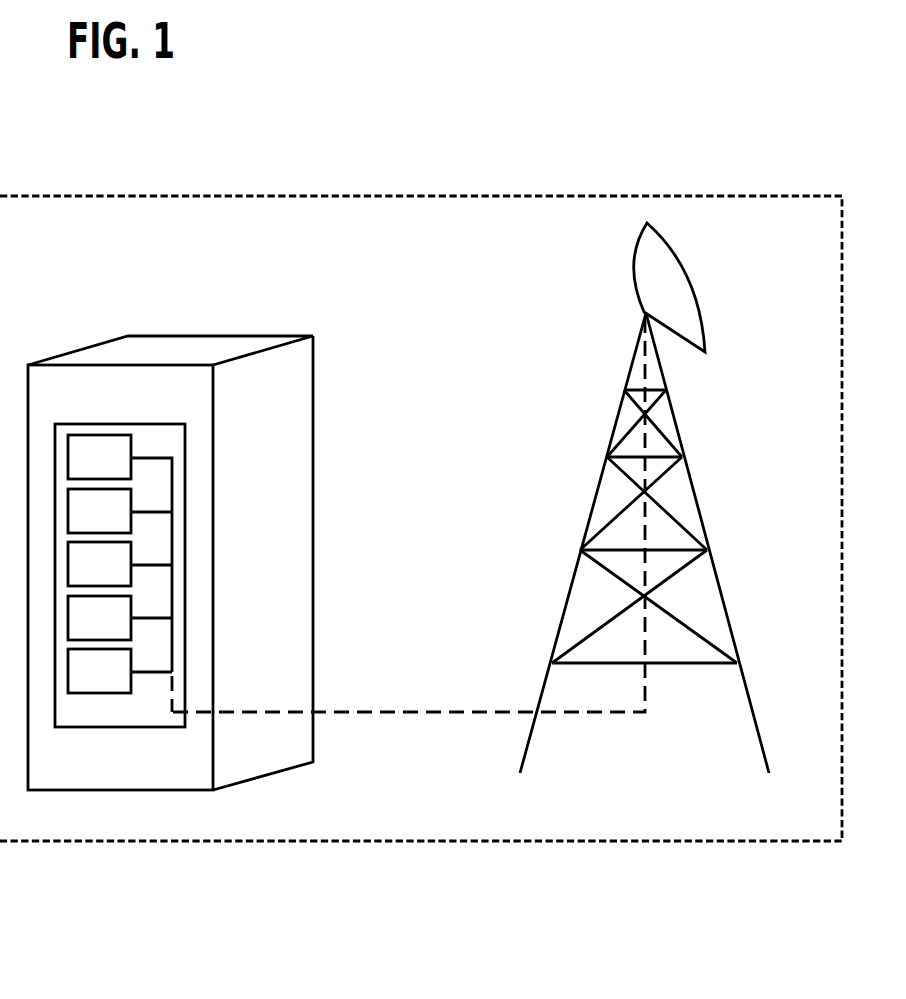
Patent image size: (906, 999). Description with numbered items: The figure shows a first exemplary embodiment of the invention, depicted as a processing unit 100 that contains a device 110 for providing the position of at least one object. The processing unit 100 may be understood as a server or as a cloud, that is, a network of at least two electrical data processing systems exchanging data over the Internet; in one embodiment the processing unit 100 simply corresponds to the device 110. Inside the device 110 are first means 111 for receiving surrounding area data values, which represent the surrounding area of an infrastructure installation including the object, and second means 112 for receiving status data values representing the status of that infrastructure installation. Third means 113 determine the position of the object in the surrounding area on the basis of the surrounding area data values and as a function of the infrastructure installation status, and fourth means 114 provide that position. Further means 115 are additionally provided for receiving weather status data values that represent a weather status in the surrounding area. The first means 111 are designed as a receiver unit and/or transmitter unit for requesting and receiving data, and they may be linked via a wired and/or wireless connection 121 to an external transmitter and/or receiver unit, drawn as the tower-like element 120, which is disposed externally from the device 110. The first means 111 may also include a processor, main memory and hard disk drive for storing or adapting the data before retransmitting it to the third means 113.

The processing unit 100 is at (405, 841).
The device 110 is at (115, 727).
The first means 111 is at (120, 471).
The second means 112 is at (120, 525).
The third means 113 is at (120, 578).
The fourth means 114 is at (120, 632).
The further means 115 is at (120, 685).
The transmission tower / antenna 120 is at (700, 663).
The wired and/or wireless connection 121 is at (416, 711).